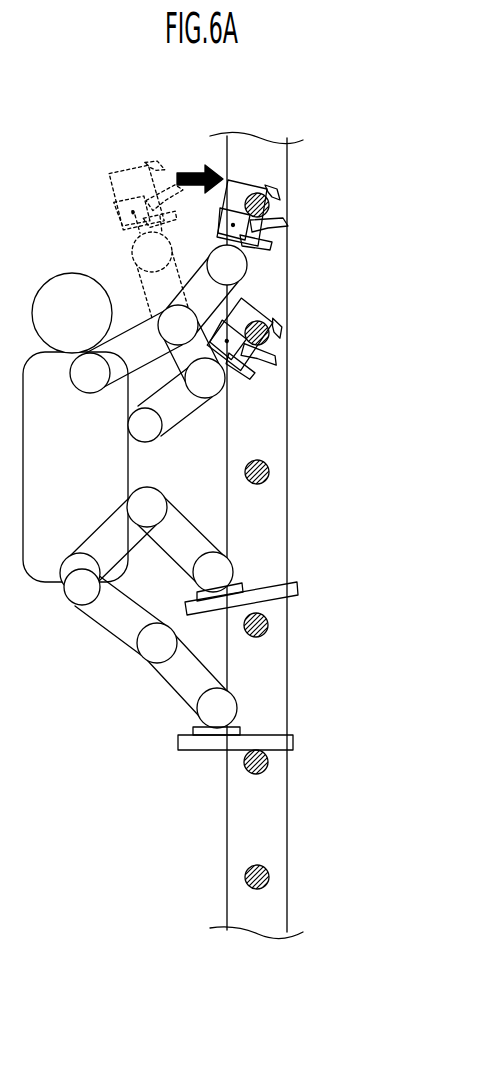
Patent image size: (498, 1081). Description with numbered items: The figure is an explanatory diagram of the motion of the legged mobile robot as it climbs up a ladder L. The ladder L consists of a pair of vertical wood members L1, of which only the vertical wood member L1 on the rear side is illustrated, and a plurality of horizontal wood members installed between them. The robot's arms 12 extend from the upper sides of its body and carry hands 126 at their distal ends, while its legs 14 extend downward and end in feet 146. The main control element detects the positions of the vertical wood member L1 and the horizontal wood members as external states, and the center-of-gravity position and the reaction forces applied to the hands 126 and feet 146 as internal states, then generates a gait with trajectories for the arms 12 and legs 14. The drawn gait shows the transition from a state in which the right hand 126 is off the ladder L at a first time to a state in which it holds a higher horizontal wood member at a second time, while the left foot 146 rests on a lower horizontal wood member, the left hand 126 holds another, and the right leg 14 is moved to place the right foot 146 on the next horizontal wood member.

The arm 12 is at (357, 330).
The leg 14 is at (164, 480).
The hand 126 is at (322, 196).
The foot 146 is at (265, 585).
The ladder L is at (309, 510).
The vertical wood member L1 is at (268, 268).